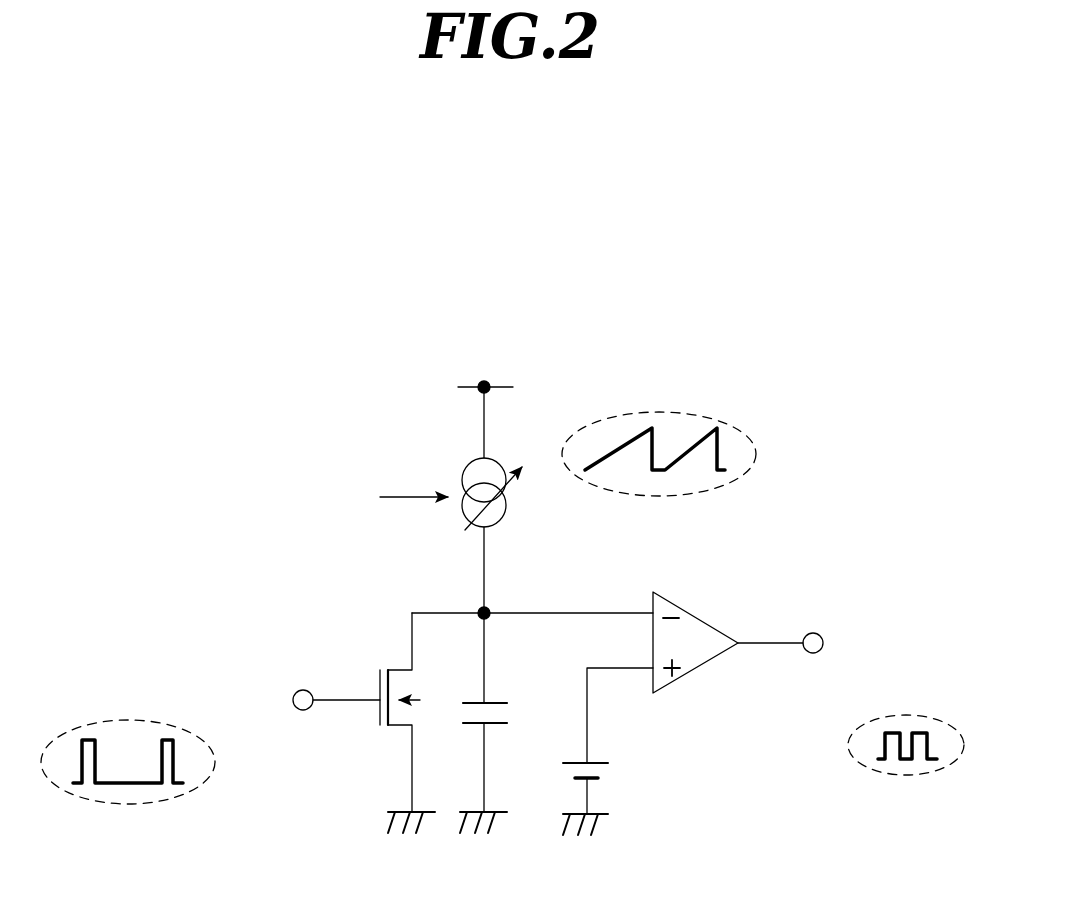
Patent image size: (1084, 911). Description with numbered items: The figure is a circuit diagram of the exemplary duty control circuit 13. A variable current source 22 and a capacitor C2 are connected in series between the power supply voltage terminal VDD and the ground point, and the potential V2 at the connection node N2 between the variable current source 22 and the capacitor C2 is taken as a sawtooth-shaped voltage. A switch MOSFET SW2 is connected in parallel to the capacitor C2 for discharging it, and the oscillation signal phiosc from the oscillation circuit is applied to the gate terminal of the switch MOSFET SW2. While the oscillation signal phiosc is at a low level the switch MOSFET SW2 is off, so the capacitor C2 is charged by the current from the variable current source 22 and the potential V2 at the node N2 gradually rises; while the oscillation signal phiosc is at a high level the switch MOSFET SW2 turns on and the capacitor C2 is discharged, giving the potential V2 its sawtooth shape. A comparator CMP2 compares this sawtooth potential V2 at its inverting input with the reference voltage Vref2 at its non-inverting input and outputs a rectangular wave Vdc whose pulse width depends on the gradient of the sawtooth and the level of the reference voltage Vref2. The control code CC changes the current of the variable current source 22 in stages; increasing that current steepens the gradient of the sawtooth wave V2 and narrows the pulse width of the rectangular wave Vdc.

The duty control circuit 13 is at (831, 351).
The variable current source 22 is at (447, 467).
The control code CC is at (394, 499).
The power supply voltage terminal VDD is at (485, 366).
The connection node N2 is at (478, 605).
The potential at connection node V2 is at (568, 492).
The switch MOSFET SW2 is at (356, 712).
The capacitor C2 is at (505, 712).
The comparator CMP2 is at (700, 615).
The reference voltage Vref2 is at (619, 741).
The rectangular wave Vdc is at (865, 717).
The oscillation signal phiosc is at (281, 700).